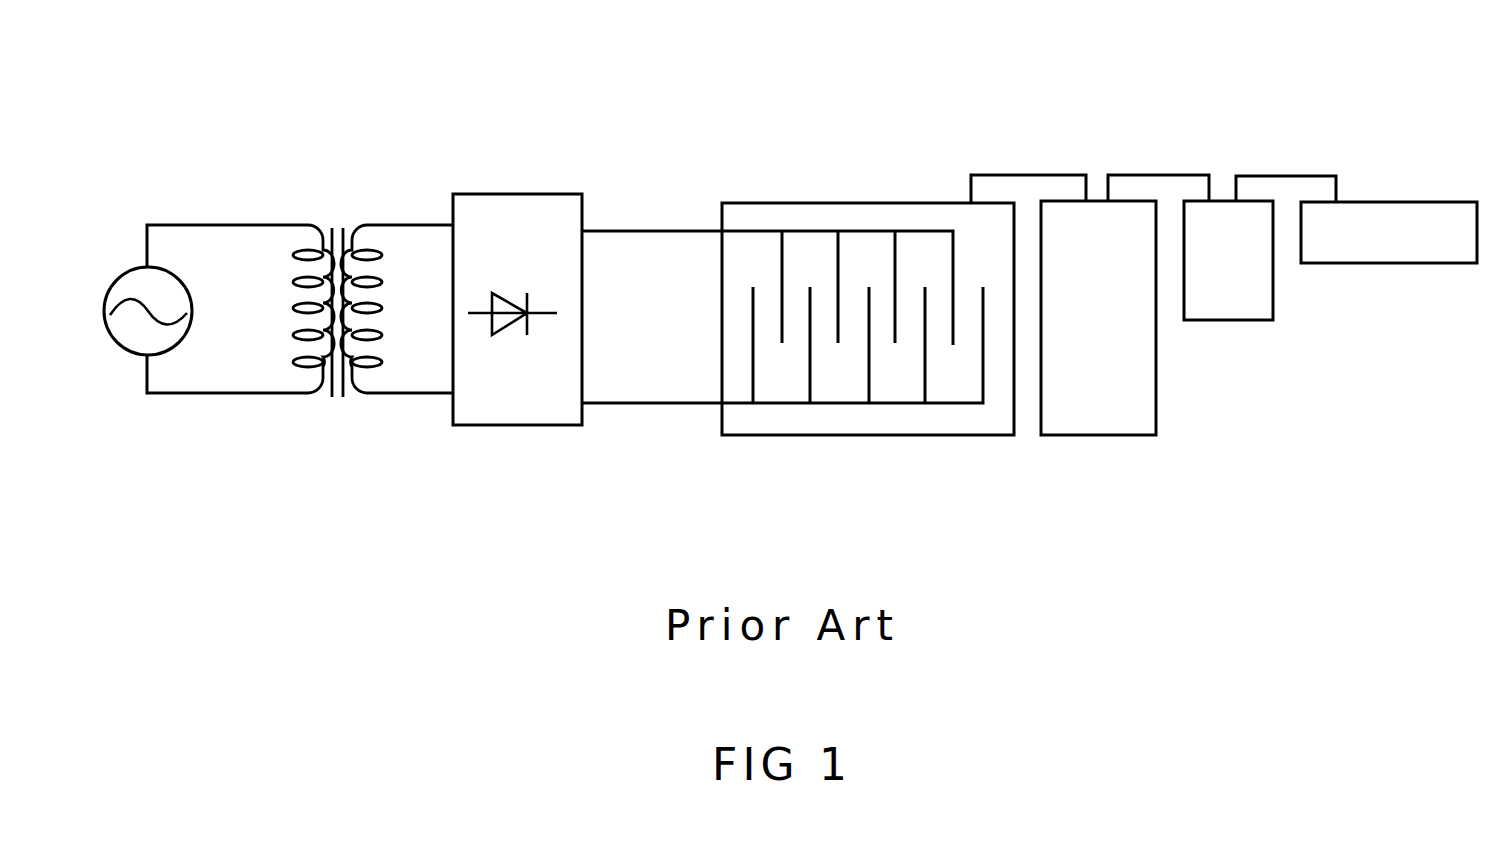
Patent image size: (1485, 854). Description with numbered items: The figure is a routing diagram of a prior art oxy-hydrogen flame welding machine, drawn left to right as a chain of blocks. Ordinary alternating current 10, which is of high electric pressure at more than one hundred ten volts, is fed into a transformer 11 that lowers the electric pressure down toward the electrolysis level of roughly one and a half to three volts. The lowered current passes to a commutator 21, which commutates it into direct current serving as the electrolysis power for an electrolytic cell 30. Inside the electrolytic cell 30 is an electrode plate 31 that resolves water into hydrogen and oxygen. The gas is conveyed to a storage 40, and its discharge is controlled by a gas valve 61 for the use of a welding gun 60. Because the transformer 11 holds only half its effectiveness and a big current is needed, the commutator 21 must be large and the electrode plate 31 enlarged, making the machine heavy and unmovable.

The alternating current 10 is at (128, 268).
The transformer 11 is at (337, 222).
The commutator 21 is at (517, 193).
The electrolytic cell 30 is at (840, 202).
The electrode plate 31 is at (755, 375).
The storage 40 is at (1096, 201).
The gas valve 61 is at (1223, 201).
The welding gun 60 is at (1393, 202).